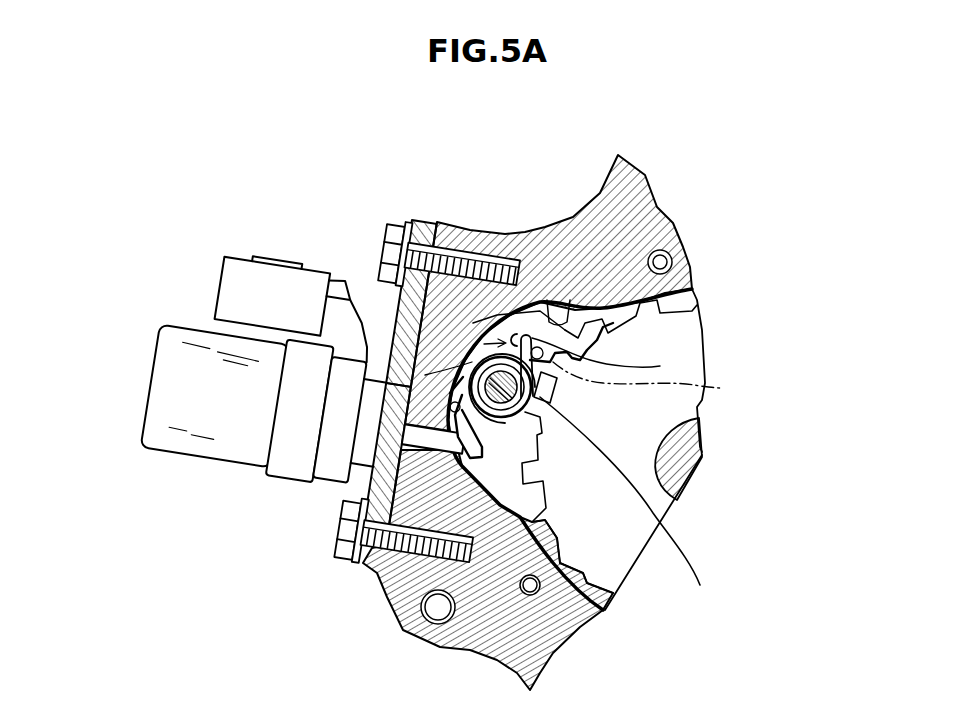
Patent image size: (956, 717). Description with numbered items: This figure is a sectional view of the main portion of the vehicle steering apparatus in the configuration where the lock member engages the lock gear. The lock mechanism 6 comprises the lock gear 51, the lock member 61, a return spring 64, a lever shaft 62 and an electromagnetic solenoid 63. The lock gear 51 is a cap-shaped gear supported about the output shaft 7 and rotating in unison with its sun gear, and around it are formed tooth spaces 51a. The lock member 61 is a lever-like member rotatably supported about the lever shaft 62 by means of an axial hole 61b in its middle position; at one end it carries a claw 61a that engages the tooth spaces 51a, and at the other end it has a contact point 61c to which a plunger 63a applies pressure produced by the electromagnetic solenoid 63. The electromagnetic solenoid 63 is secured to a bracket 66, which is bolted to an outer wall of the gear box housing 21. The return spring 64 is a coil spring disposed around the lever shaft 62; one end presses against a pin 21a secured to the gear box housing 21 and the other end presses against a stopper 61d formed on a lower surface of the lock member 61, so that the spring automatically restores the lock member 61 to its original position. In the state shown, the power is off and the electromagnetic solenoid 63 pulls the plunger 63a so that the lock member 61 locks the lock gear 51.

The lock mechanism 6 is at (260, 417).
The output shaft 7 is at (683, 455).
The gear box housing 21 is at (643, 202).
The pin 21a is at (375, 350).
The lock gear 51 is at (612, 468).
The tooth spaces 51a is at (590, 567).
The lock member 61 is at (519, 291).
The claw 61a is at (573, 327).
The axial hole 61b is at (382, 347).
The contact point 61c is at (378, 507).
The stopper 61d is at (700, 386).
The lever shaft 62 is at (655, 514).
The electromagnetic solenoid 63 is at (165, 450).
The plunger 63a is at (372, 491).
The return spring 64 is at (660, 366).
The bracket 66 is at (369, 575).